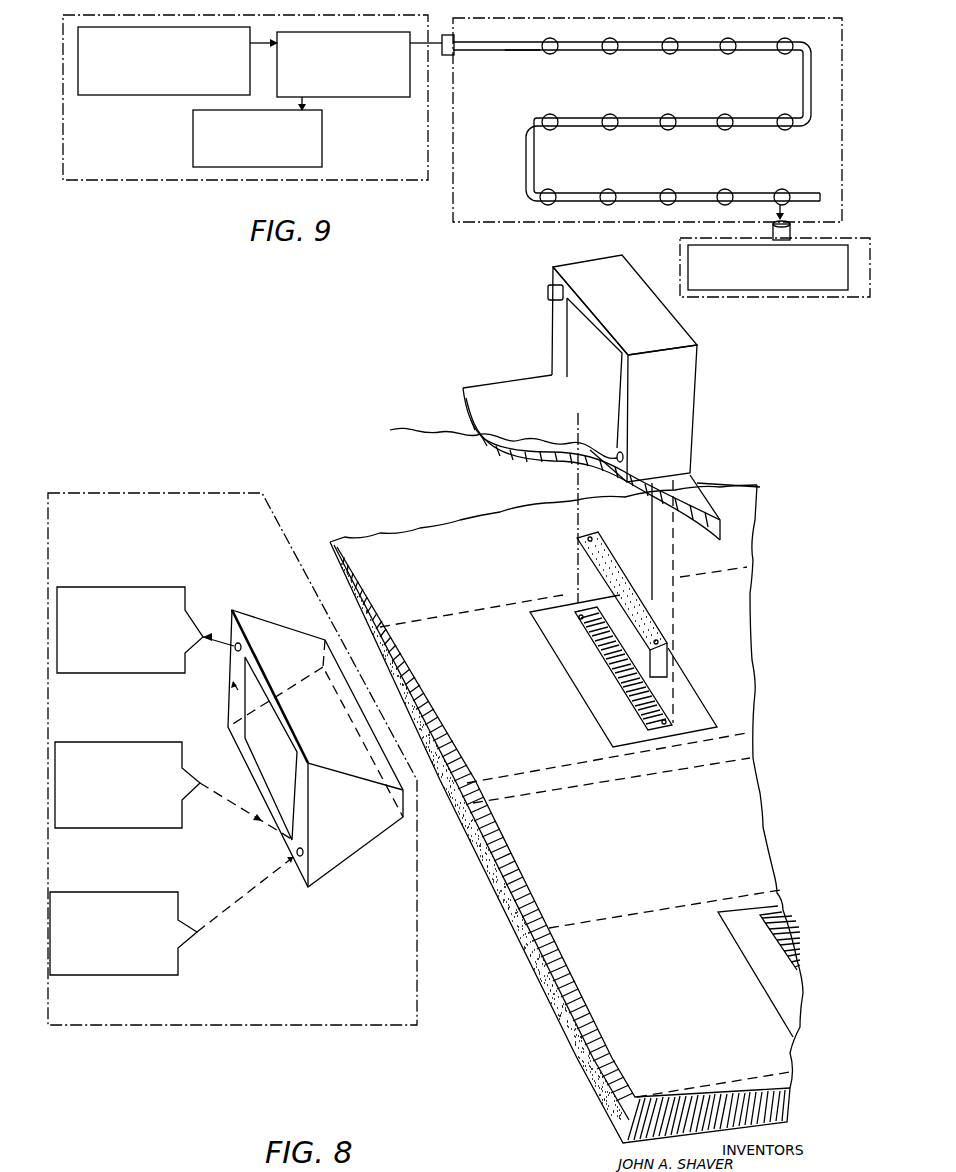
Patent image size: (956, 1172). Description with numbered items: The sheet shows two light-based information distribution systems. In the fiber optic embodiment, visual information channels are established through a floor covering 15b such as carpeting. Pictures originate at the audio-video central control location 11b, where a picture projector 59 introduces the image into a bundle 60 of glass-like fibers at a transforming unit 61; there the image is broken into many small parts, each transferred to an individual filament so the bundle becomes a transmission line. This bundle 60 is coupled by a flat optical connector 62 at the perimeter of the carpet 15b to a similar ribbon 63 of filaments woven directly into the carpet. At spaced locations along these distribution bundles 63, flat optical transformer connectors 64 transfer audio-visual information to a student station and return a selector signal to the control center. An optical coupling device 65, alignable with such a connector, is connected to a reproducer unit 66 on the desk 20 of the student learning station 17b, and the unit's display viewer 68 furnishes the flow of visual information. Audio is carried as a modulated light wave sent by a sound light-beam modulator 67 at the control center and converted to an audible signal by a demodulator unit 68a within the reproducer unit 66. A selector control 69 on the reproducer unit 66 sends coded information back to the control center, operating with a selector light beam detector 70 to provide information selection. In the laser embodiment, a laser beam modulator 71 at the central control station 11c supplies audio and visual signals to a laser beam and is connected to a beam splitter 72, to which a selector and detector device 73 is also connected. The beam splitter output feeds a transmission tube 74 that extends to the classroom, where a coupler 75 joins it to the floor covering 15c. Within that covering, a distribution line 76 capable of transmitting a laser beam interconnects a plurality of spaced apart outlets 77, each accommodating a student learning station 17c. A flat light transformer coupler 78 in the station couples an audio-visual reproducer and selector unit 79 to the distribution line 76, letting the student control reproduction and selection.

In FIG. 9, the central control station 11c is at (174, 181).
In FIG. 9, the laser beam modulator 71 is at (124, 98).
In FIG. 9, the beam splitter 72 is at (372, 98).
In FIG. 9, the selector and detector device 73 is at (193, 153).
In FIG. 9, the transmission tube 74 is at (455, 56).
In FIG. 9, the coupler 75 is at (452, 35).
In FIG. 9, the distribution line 76 is at (524, 52).
In FIG. 9, the outlets 77 is at (580, 116).
In FIG. 9, the flat light transformer coupler 78 is at (781, 128).
In FIG. 9, the student learning station 17c is at (550, 56).
In FIG. 9, the floor covering 15c is at (520, 222).
In FIG. 9, the audio-visual reproducer and selector unit 79 is at (800, 298).
In FIG. 8, the audio-video central control location 11b is at (140, 1025).
In FIG. 8, the selector light beam detector 70 is at (103, 590).
In FIG. 8, the picture projector 59 is at (100, 742).
In FIG. 8, the sound light-beam modulator 67 is at (90, 892).
In FIG. 8, the transforming unit 61 is at (340, 858).
In FIG. 8, the bundle of glass-like fibers 60 is at (436, 812).
In FIG. 8, the flat optical connector 62 is at (440, 713).
In FIG. 8, the floor covering 15b is at (500, 912).
In FIG. 8, the ribbon 63 is at (531, 796).
In FIG. 8, the flat optical transformer connectors 64 is at (698, 714).
In FIG. 8, the optical coupling device 65 is at (682, 585).
In FIG. 8, the student learning station 17b is at (717, 450).
In FIG. 8, the reproducer unit 66 is at (703, 383).
In FIG. 8, the display viewer 68 is at (597, 367).
In FIG. 8, the demodulator unit 68a is at (385, 441).
In FIG. 8, the selector control 69 is at (548, 292).
In FIG. 8, the desk 20 is at (480, 400).